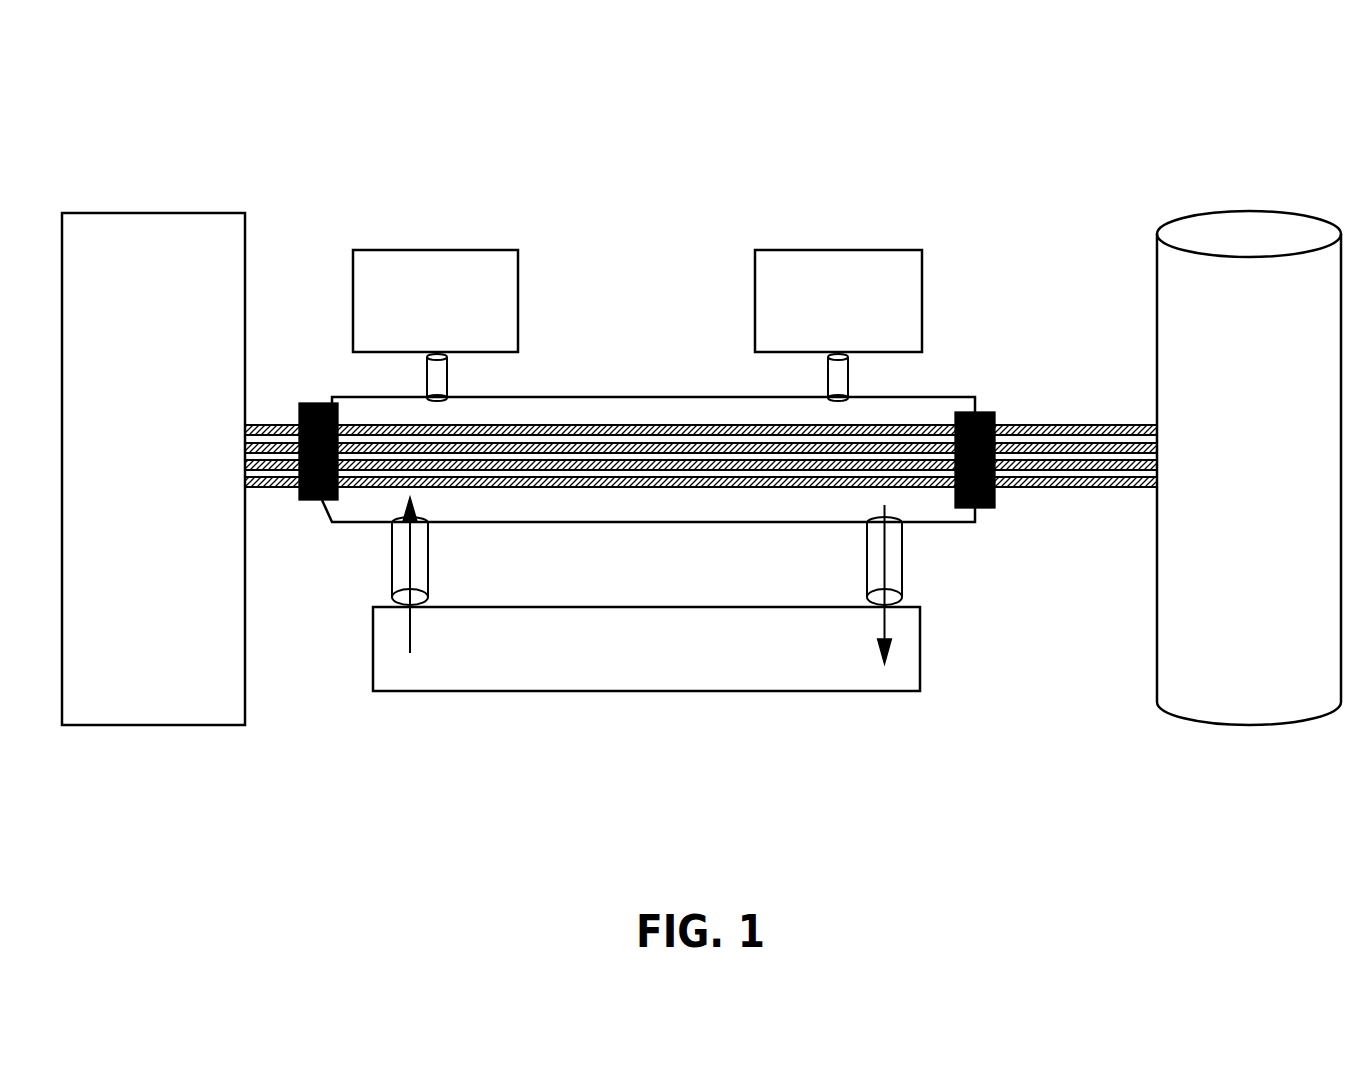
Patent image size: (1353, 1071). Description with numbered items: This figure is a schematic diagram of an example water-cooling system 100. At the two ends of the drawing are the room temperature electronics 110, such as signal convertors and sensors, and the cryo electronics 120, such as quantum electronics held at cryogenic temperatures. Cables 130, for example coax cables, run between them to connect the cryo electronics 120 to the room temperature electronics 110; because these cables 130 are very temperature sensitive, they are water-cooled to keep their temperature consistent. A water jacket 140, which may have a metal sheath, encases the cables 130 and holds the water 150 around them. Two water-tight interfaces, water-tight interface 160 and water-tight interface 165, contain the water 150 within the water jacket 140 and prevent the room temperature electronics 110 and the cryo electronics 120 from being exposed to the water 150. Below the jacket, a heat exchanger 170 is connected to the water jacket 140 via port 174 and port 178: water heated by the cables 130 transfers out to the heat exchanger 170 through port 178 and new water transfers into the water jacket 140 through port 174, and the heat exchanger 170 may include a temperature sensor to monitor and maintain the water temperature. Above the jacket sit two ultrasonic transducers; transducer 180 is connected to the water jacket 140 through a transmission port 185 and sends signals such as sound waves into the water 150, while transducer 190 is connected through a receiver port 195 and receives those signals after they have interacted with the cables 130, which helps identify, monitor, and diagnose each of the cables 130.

The water-cooling system 100 is at (1240, 111).
The room temperature electronics 110 is at (176, 519).
The cryo electronics 120 is at (1272, 519).
The cables 130 is at (1051, 404).
The water jacket 140 is at (537, 397).
The water 150 is at (645, 415).
The water-tight interface 160 is at (985, 508).
The water-tight interface 165 is at (313, 500).
The heat exchanger 170 is at (762, 662).
The port 174 is at (428, 540).
The port 178 is at (902, 565).
The transducer 180 is at (458, 329).
The transmission (TX) port 185 is at (427, 384).
The transducer 190 is at (860, 329).
The receiver (RX) port 195 is at (848, 375).